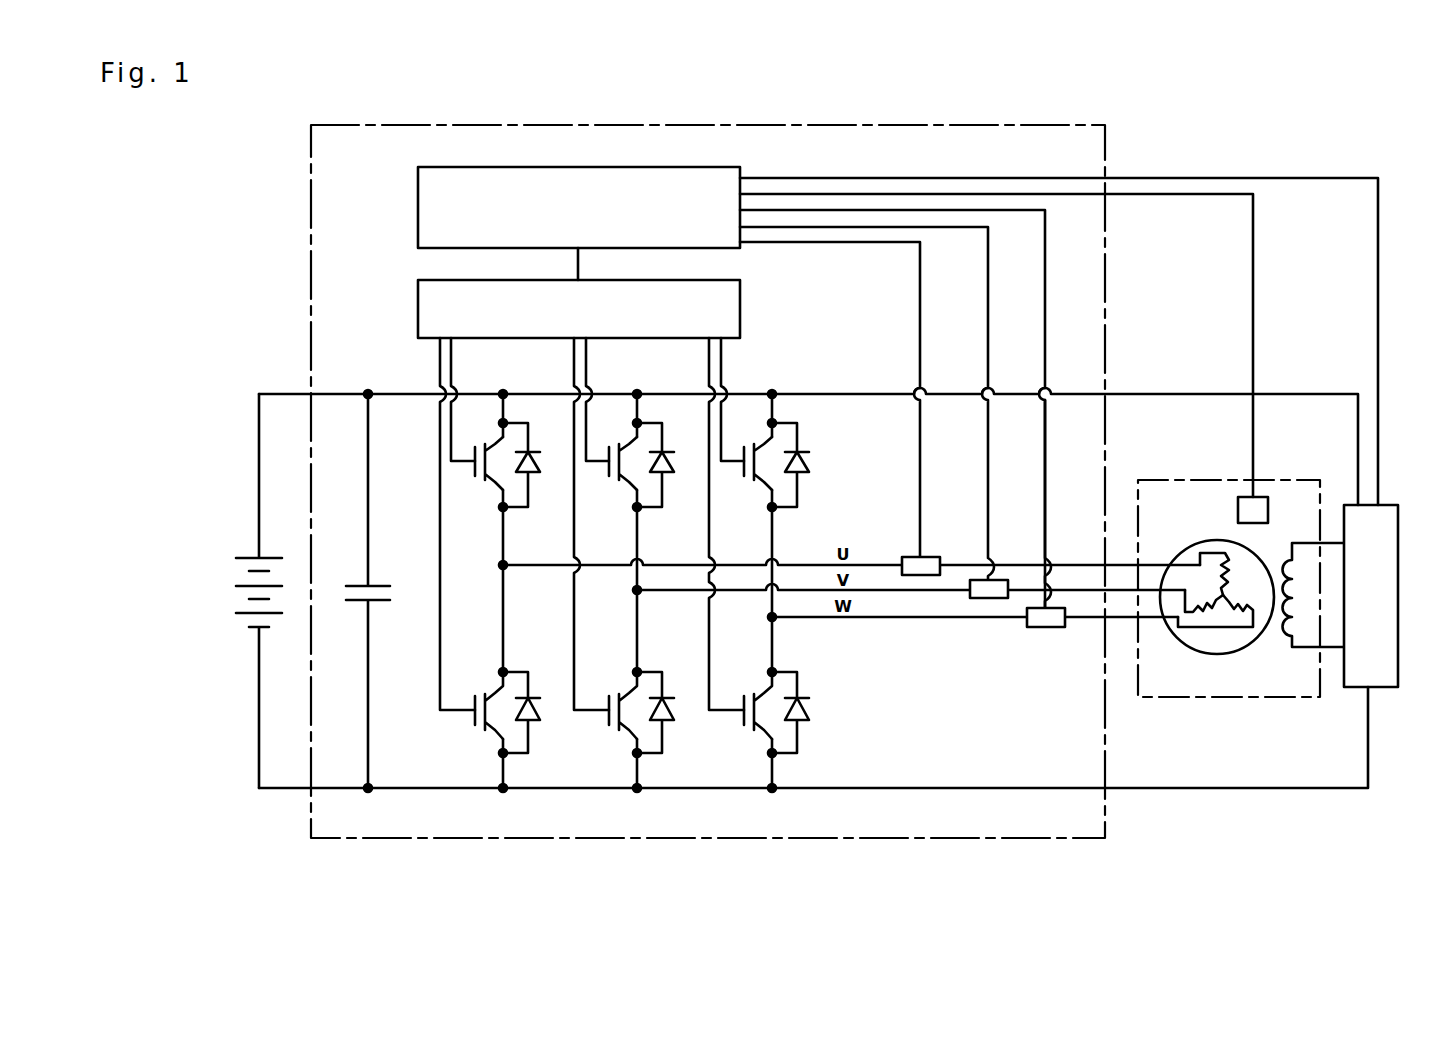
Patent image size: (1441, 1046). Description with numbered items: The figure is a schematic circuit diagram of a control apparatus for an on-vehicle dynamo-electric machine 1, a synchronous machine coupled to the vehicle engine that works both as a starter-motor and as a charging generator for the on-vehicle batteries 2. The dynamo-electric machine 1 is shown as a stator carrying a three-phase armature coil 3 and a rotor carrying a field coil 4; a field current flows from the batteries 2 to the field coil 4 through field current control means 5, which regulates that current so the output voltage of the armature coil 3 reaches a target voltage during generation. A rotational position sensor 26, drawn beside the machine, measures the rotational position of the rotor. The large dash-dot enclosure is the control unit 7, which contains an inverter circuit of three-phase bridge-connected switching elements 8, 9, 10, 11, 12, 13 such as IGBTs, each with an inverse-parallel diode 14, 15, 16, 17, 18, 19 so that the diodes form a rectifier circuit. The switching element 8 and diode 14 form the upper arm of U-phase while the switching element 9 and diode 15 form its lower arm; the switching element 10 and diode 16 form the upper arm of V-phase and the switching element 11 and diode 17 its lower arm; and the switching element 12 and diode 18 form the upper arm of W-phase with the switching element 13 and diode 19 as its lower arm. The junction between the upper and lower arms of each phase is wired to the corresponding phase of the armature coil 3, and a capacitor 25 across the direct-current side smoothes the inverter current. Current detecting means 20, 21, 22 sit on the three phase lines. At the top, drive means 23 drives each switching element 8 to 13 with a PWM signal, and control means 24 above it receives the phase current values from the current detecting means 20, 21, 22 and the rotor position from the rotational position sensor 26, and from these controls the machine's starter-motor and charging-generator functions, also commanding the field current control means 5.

The dynamo-electric machine 1 is at (1183, 698).
The on-vehicle batteries 2 is at (236, 597).
The three-phase armature coil 3 is at (1227, 557).
The field coil 4 is at (1284, 622).
The field current control means 5 is at (1396, 505).
The control unit 7 is at (1107, 141).
The switching element 8 is at (474, 485).
The switching element 9 is at (476, 727).
The switching element 10 is at (608, 485).
The switching element 11 is at (608, 692).
The switching element 12 is at (743, 485).
The switching element 13 is at (745, 692).
The diode 14 is at (541, 480).
The diode 15 is at (541, 727).
The diode 16 is at (675, 480).
The diode 17 is at (676, 727).
The diode 18 is at (810, 465).
The diode 19 is at (812, 717).
The current detecting means 20 is at (905, 557).
The current detecting means 21 is at (975, 580).
The current detecting means 22 is at (1037, 608).
The drive means 23 is at (742, 303).
The control means 24 is at (418, 206).
The capacitor 25 is at (345, 585).
The rotational position sensor 26 is at (1265, 492).